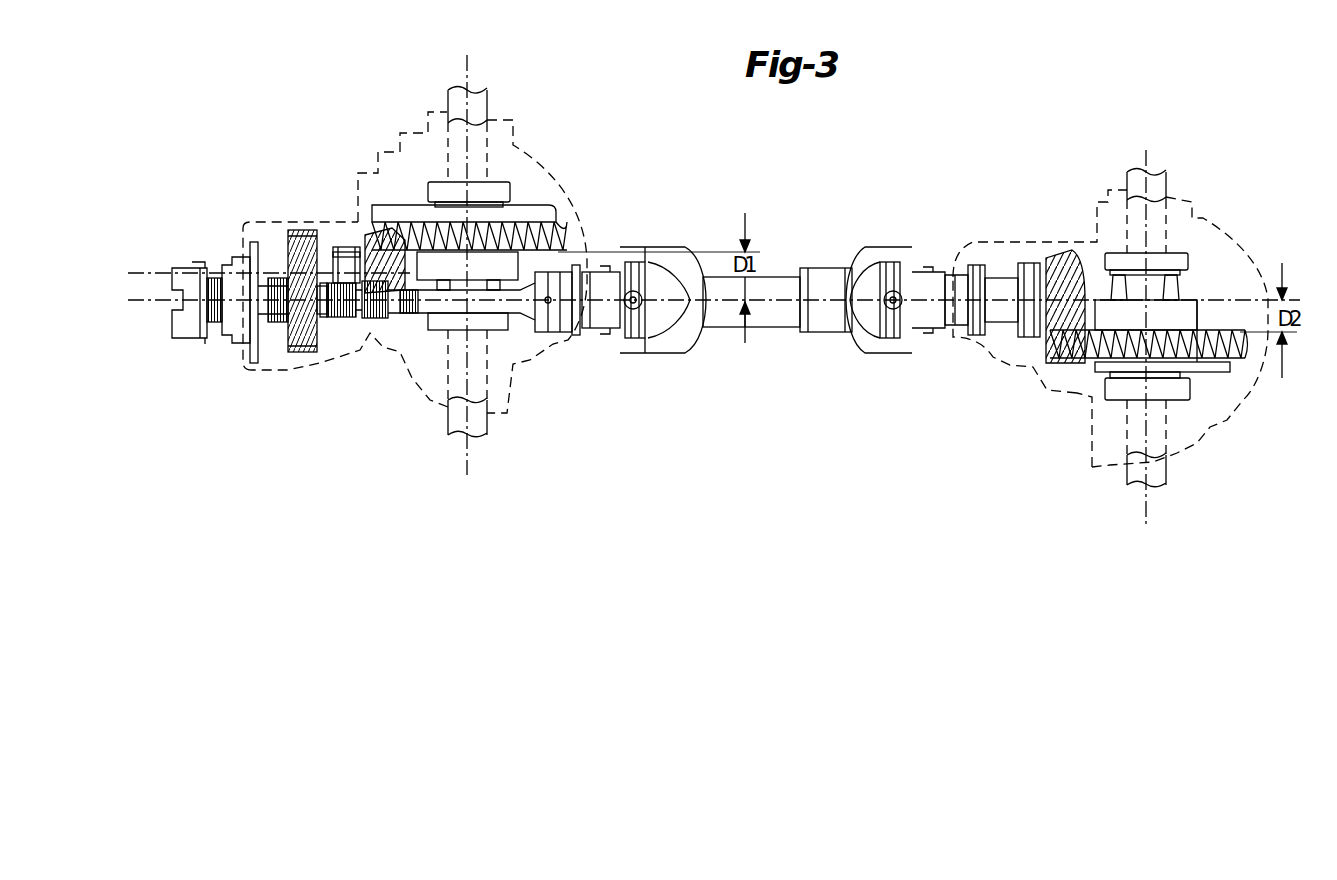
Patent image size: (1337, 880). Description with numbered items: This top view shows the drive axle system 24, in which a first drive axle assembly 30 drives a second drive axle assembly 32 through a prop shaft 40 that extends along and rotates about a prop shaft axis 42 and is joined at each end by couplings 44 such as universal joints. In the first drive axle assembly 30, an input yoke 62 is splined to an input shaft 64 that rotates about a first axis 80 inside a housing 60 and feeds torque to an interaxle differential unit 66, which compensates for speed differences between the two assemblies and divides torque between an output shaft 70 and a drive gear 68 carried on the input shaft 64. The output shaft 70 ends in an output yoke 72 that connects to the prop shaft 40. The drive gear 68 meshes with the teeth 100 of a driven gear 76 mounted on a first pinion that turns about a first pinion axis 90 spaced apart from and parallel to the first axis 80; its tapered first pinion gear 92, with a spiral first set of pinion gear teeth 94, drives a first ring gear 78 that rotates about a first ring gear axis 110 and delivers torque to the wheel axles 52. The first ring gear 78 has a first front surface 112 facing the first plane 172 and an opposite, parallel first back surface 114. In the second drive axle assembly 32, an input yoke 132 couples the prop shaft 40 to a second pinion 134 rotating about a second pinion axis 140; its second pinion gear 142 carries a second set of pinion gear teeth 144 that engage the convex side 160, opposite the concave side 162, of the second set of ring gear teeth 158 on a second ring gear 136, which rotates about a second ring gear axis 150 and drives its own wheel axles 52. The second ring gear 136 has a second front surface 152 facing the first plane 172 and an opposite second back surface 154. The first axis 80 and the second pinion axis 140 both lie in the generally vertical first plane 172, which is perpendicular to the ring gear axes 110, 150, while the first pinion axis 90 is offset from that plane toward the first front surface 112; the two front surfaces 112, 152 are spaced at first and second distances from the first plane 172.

The first axle assembly 24 is at (386, 115).
The first drive axle assembly 30 is at (243, 226).
The second drive axle assembly 32 is at (1222, 238).
The prop shaft 40 is at (773, 277).
The prop shaft axis 42 is at (822, 292).
The couplings 44 is at (634, 353).
The wheel axles 52 is at (484, 101).
The housing 60 is at (524, 132).
The input yoke 62 is at (181, 267).
The input shaft 64 is at (345, 320).
The interaxle differential unit 66 is at (340, 360).
The drive gear 68 is at (305, 355).
The output shaft 70 is at (473, 312).
The output yoke 72 is at (595, 338).
The driven gear 76 is at (272, 245).
The first ring gear 78 is at (384, 232).
The first axis 80 is at (138, 303).
The first pinion axis 90 is at (140, 273).
The first pinion gear 92 is at (358, 240).
The first set of pinion gear teeth 94 is at (360, 246).
The teeth 100 is at (302, 229).
The first ring gear axis 110 is at (467, 455).
The first front surface 112 is at (583, 258).
The first back surface 114 is at (564, 243).
The input yoke 132 is at (936, 272).
The second pinion 134 is at (1000, 278).
The second ring gear 136 is at (1250, 360).
The second pinion axis 140 is at (1240, 300).
The second pinion gear 142 is at (1027, 262).
The second set of pinion gear teeth 144 is at (1075, 262).
The second ring gear axis 150 is at (1150, 505).
The second front surface 152 is at (1187, 330).
The second back surface 154 is at (1244, 372).
The second set of ring gear teeth 158 is at (1250, 342).
The convex side 160 is at (1097, 368).
The concave side 162 is at (1207, 340).
The first plane 172 is at (770, 310).